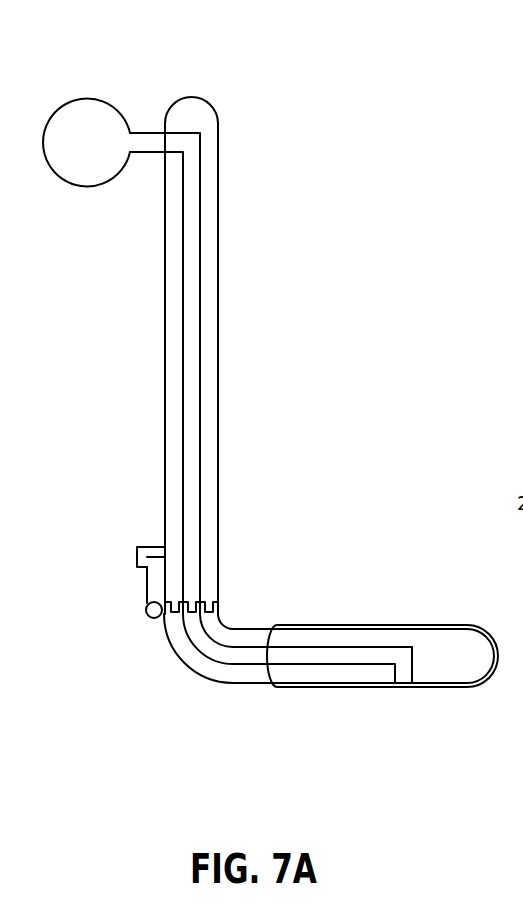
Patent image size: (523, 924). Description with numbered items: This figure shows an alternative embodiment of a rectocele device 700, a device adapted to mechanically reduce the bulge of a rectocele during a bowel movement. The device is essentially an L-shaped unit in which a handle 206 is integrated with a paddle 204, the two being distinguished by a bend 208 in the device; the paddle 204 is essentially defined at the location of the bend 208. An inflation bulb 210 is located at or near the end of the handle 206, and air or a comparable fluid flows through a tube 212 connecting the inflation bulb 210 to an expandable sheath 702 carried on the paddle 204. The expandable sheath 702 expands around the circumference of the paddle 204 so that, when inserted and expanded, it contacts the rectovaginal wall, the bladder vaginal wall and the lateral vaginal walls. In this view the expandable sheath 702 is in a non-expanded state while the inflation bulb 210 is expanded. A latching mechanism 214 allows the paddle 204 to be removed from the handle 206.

The rectocele device 700 is at (377, 348).
The inflation bulb 210 is at (82, 98).
The tube 212 is at (202, 297).
The handle 206 is at (162, 450).
The bend 208 is at (232, 618).
The latching mechanism 214 is at (145, 578).
The paddle 204 is at (347, 625).
The expandable sheath 702 is at (408, 683).